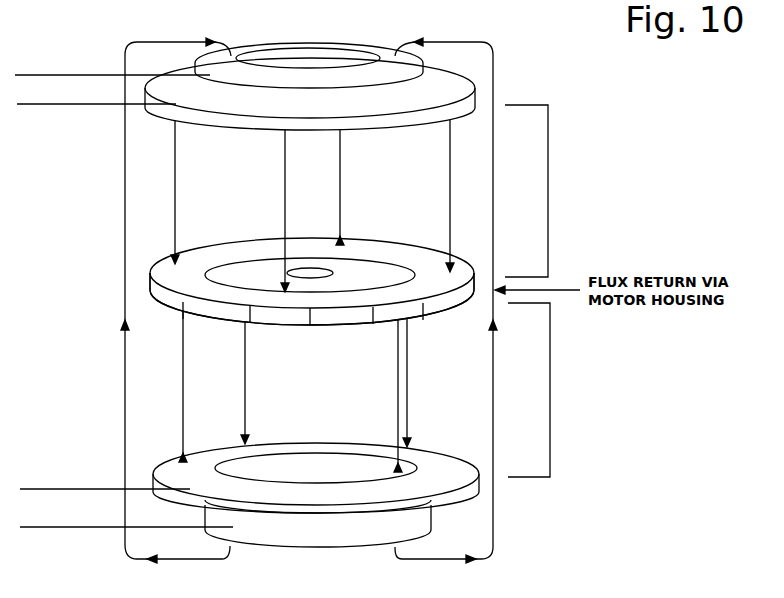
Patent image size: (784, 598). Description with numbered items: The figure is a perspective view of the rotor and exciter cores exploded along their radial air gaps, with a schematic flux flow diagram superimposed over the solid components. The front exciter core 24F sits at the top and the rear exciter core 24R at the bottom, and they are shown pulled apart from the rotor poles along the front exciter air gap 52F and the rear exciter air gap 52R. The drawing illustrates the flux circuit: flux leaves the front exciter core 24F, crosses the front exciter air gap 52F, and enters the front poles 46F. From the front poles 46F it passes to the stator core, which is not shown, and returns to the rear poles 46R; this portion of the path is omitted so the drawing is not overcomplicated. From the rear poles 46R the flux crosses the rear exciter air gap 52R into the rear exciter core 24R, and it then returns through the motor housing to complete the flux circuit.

The front exciter core 24F is at (242, 114).
The rear exciter core 24R is at (233, 502).
The front poles 46F is at (278, 315).
The rear poles 46R is at (177, 305).
The front exciter air gap 52F is at (548, 192).
The rear exciter air gap 52R is at (550, 390).